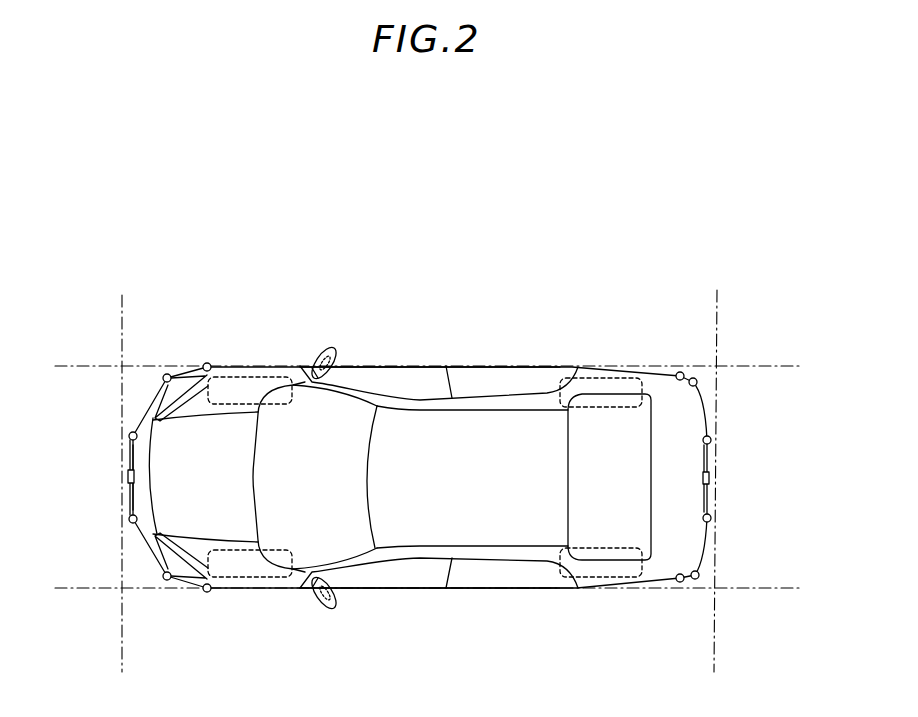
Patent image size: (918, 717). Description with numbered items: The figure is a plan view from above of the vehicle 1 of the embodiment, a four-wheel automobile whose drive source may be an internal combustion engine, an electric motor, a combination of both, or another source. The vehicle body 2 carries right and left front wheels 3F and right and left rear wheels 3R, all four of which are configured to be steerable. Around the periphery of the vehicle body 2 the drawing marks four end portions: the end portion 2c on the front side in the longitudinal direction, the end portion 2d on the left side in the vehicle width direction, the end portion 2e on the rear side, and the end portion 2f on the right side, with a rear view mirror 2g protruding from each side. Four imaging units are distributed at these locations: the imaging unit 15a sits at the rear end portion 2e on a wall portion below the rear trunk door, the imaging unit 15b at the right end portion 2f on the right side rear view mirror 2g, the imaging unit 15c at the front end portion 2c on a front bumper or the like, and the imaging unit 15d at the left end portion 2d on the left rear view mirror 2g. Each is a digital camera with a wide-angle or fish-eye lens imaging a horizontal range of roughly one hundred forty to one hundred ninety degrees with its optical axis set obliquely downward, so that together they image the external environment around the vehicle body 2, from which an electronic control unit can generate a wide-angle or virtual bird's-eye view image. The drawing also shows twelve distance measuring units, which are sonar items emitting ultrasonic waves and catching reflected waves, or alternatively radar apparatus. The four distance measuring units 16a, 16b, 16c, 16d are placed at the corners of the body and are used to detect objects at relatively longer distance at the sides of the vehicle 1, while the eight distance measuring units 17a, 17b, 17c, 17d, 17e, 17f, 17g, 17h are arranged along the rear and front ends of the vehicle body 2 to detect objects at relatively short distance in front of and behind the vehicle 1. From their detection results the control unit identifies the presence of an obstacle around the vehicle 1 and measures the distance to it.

The vehicle 1 is at (519, 294).
The vehicle body 2 is at (658, 370).
The end portion on the front side 2c is at (130, 489).
The end portion on the left side 2d is at (508, 590).
The end portion on the rear side 2e is at (712, 495).
The end portion on the right side 2f is at (517, 365).
The rear view mirror 2g is at (336, 350).
The front wheels 3F is at (244, 376).
The rear wheels 3R is at (598, 376).
The imaging unit 15a is at (712, 476).
The imaging unit 15b is at (320, 357).
The imaging unit 15c is at (128, 471).
The imaging unit 15d is at (322, 608).
The distance measuring unit 16a is at (680, 583).
The distance measuring unit 16b is at (683, 372).
The distance measuring unit 16c is at (206, 363).
The distance measuring unit 16d is at (206, 592).
The distance measuring unit 17a is at (700, 574).
The distance measuring unit 17b is at (711, 519).
The distance measuring unit 17c is at (711, 437).
The distance measuring unit 17d is at (698, 379).
The distance measuring unit 17e is at (162, 378).
The distance measuring unit 17f is at (129, 435).
The distance measuring unit 17g is at (129, 519).
The distance measuring unit 17h is at (162, 576).